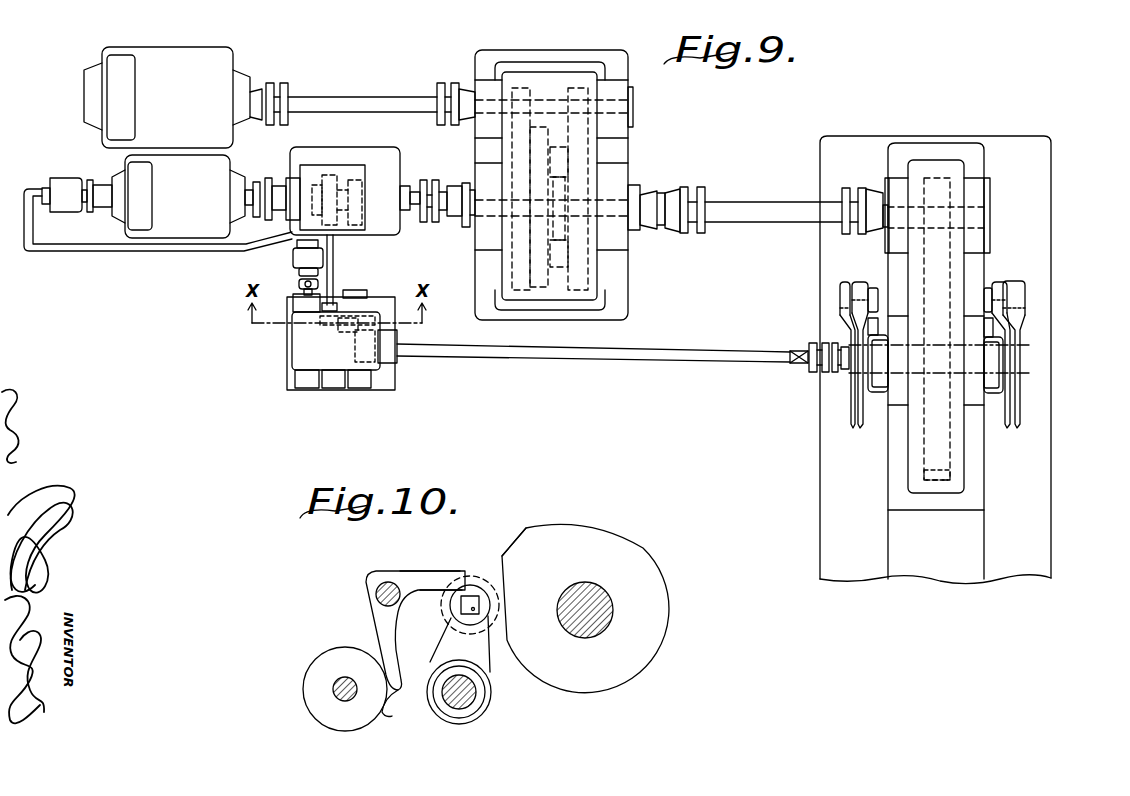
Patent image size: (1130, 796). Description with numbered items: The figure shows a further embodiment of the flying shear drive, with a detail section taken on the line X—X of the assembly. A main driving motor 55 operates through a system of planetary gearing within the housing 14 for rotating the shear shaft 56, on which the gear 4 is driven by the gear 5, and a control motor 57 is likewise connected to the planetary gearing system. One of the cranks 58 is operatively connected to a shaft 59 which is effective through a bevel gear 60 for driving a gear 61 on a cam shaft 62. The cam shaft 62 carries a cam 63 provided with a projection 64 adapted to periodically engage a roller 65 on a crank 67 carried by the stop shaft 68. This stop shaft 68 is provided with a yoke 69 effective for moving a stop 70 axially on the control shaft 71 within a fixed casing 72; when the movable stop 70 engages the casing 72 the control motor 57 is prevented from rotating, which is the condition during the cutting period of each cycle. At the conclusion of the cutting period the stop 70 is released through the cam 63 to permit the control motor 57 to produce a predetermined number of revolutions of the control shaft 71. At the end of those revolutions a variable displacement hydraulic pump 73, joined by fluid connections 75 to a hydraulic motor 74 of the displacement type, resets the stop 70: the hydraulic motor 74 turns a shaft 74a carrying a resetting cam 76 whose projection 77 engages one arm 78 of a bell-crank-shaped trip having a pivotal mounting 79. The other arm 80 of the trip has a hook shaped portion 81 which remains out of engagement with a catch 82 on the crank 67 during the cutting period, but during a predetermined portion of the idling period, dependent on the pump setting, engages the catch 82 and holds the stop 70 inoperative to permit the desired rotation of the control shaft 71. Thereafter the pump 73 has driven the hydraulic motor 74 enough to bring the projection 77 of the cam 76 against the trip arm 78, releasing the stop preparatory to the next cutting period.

In FIG. 9, the gear 4 is at (922, 455).
In FIG. 9, the gear 5 is at (937, 168).
In FIG. 9, the housing 14 is at (597, 87).
In FIG. 9, the main driving motor 55 is at (165, 58).
In FIG. 9, the shear shaft 56 is at (752, 212).
In FIG. 9, the control motor 57 is at (178, 196).
In FIG. 9, the crank 58 is at (866, 325).
In FIG. 9, the shaft 59 is at (620, 353).
In FIG. 9, the bevel gear 60 is at (366, 370).
In FIG. 9, the gear 61 is at (358, 338).
In FIG. 9, the cam shaft 62 is at (345, 323).
In FIG. 10, the cam shaft 62 is at (613, 609).
In FIG. 10, the cam 63 is at (636, 558).
In FIG. 10, the projection 64 is at (517, 528).
In FIG. 10, the roller 65 is at (442, 606).
In FIG. 10, the crank 67 is at (484, 660).
In FIG. 9, the stop shaft 68 is at (336, 246).
In FIG. 10, the stop shaft 68 is at (460, 702).
In FIG. 9, the yoke 69 is at (336, 180).
In FIG. 9, the stop 70 is at (372, 180).
In FIG. 9, the control shaft 71 is at (294, 182).
In FIG. 9, the fixed casing 72 is at (321, 168).
In FIG. 9, the variable displacement hydraulic pump 73 is at (64, 188).
In FIG. 9, the hydraulic motor 74 is at (296, 259).
In FIG. 9, the shaft 74a is at (313, 284).
In FIG. 10, the shaft 74a is at (333, 689).
In FIG. 9, the fluid connections 75 is at (108, 253).
In FIG. 10, the resetting cam 76 is at (323, 668).
In FIG. 10, the projection 77 is at (386, 714).
In FIG. 10, the arm 78 is at (385, 640).
In FIG. 10, the pivotal mounting 79 is at (377, 593).
In FIG. 10, the arm 80 is at (432, 576).
In FIG. 10, the hook shaped portion 81 is at (478, 596).
In FIG. 10, the catch 82 is at (483, 590).